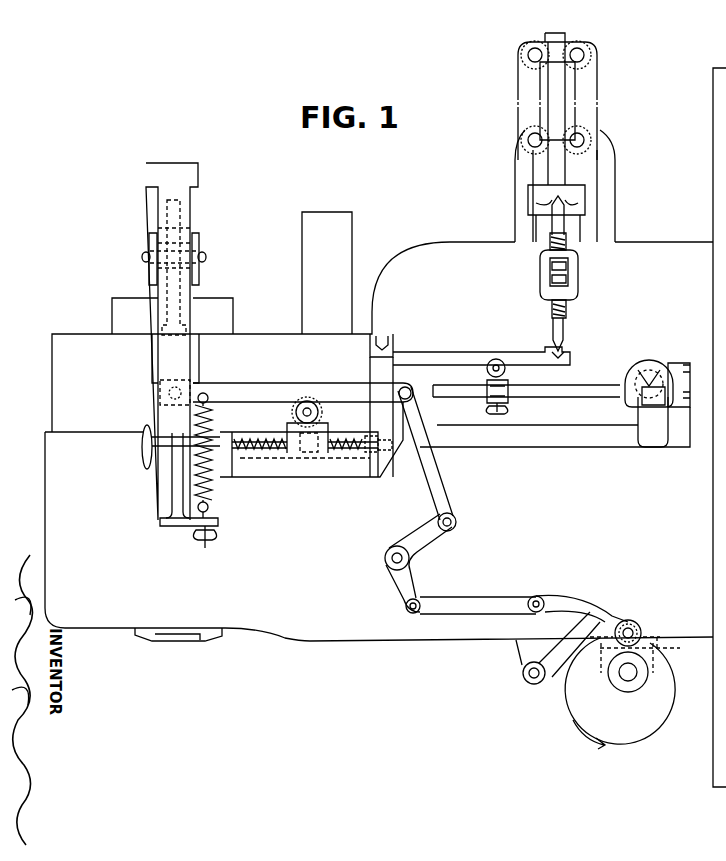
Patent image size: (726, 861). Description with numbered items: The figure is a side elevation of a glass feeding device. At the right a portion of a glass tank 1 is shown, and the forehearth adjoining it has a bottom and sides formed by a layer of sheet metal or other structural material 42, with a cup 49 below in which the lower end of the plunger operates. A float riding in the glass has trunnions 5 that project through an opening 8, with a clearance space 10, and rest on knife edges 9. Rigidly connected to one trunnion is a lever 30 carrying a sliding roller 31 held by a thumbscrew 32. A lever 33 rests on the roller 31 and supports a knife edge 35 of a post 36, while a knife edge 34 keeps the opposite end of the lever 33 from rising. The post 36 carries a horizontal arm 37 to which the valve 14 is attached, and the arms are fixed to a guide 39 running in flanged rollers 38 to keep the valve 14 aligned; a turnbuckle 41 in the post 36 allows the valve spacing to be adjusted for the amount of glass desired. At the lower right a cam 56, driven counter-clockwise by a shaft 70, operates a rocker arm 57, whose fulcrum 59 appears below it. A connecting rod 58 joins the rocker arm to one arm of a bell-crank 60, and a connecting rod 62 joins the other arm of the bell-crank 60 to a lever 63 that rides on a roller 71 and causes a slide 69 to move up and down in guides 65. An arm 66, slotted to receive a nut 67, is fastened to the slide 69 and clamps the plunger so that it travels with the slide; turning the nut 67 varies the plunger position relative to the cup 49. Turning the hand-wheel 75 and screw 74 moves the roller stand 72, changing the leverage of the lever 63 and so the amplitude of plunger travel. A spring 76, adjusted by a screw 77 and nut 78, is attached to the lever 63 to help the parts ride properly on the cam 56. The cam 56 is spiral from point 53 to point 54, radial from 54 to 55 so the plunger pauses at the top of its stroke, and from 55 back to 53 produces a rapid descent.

The tank 1 is at (722, 92).
The trunnions 5 is at (638, 378).
The opening 8 is at (632, 407).
The knife edges 9 is at (651, 382).
The clearance space 10 is at (633, 415).
The valve 14 is at (574, 227).
The lever 30 is at (565, 388).
The sliding roller 31 is at (488, 368).
The thumbscrew 32 is at (510, 407).
The lever 33 is at (467, 358).
The knife edge 34 is at (395, 352).
The knife edge 35 is at (567, 353).
The post 36 is at (552, 238).
The horizontal arm 37 is at (562, 195).
The flanged rollers 38 is at (582, 45).
The guide 39 is at (560, 165).
The turnbuckle 41 is at (580, 272).
The structural material layer 42 is at (70, 432).
The cup 49 is at (152, 634).
The cam point 53 is at (666, 649).
The cam point 54 is at (620, 704).
The cam point 55 is at (613, 631).
The cam 56 is at (580, 713).
The rocker arm 57 is at (560, 620).
The connecting rod 58 is at (480, 603).
The link 59 is at (524, 675).
The bell-crank 60 is at (428, 528).
The connecting rod 62 is at (437, 470).
The lever 63 is at (258, 391).
The guides 65 is at (185, 350).
The arm 66 is at (200, 274).
The nut 67 is at (206, 257).
The slide 69 is at (157, 352).
The shaft 70 is at (630, 678).
The roller 71 is at (296, 412).
The roller stand 72 is at (326, 428).
The screw 74 is at (278, 450).
The hand-wheel 75 is at (141, 454).
The spring 76 is at (210, 491).
The screw 77 is at (212, 541).
The nut 78 is at (192, 528).